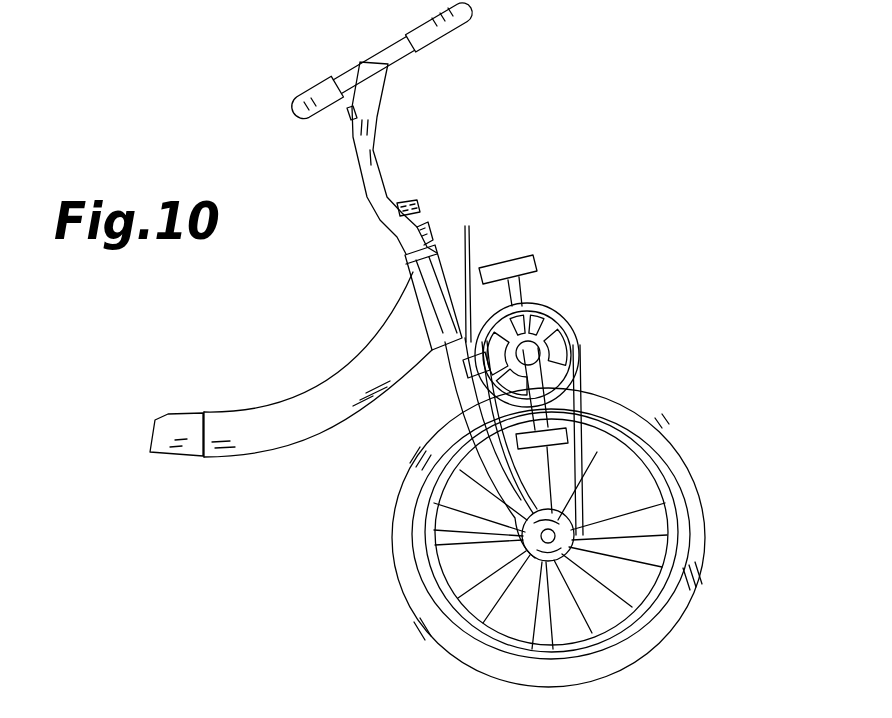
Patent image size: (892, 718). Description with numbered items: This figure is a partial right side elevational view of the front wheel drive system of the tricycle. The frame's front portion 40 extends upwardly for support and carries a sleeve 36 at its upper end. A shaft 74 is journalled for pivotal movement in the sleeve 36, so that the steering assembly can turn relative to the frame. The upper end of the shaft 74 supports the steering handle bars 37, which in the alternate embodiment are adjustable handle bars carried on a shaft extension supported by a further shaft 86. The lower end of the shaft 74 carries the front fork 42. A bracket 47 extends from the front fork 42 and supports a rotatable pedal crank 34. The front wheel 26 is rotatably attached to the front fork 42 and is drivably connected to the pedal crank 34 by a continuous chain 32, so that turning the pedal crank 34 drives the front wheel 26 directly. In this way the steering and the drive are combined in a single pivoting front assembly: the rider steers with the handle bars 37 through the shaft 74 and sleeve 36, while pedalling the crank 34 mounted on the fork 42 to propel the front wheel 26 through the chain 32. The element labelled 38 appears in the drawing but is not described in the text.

The front wheel 26 is at (410, 606).
The continuous chain 32 is at (578, 462).
The pedal crank 34 is at (567, 332).
The sleeve 36 is at (410, 268).
The steering handle bars 37 is at (352, 74).
The brake rod with handle 38 is at (540, 284).
The front portion 40 is at (340, 375).
The front fork 42 is at (457, 403).
The bracket 47 is at (466, 232).
The shaft 74 is at (390, 97).
The shaft 86 is at (390, 175).